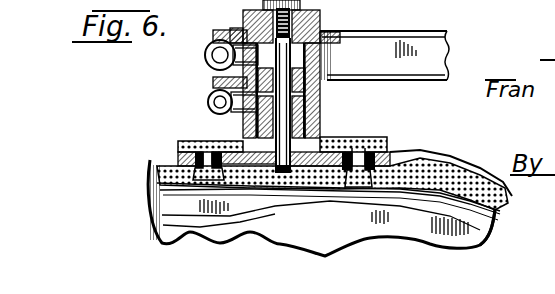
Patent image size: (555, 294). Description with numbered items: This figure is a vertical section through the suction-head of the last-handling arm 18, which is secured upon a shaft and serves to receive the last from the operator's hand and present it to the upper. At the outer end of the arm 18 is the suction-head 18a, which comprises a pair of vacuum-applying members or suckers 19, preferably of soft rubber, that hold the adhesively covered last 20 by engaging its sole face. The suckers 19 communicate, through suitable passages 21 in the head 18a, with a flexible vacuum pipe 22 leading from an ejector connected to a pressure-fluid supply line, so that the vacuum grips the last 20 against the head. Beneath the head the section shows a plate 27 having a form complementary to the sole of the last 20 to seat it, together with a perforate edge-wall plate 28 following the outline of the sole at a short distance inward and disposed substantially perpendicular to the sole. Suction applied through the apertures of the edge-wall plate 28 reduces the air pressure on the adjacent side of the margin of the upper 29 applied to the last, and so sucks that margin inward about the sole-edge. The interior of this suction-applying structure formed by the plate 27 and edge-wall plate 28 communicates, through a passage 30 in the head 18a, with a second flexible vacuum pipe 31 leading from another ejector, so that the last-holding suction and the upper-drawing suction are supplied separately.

The arm 18 is at (408, 36).
The suction-head 18a is at (325, 137).
The vacuum-applying members or suckers 19 is at (148, 193).
The last 20 is at (170, 223).
The passages 21 is at (212, 141).
The flexible vacuum pipe 22 is at (206, 100).
The plate 27 is at (423, 188).
The perforate edge-wall plate 28 is at (437, 173).
The upper 29 is at (488, 229).
The passage 30 is at (283, 127).
The flexible vacuum pipe 31 is at (205, 62).